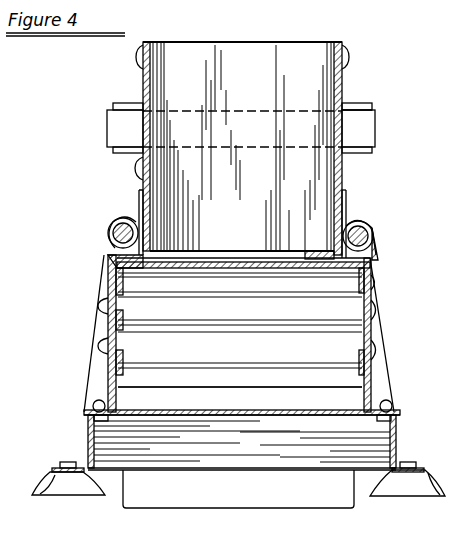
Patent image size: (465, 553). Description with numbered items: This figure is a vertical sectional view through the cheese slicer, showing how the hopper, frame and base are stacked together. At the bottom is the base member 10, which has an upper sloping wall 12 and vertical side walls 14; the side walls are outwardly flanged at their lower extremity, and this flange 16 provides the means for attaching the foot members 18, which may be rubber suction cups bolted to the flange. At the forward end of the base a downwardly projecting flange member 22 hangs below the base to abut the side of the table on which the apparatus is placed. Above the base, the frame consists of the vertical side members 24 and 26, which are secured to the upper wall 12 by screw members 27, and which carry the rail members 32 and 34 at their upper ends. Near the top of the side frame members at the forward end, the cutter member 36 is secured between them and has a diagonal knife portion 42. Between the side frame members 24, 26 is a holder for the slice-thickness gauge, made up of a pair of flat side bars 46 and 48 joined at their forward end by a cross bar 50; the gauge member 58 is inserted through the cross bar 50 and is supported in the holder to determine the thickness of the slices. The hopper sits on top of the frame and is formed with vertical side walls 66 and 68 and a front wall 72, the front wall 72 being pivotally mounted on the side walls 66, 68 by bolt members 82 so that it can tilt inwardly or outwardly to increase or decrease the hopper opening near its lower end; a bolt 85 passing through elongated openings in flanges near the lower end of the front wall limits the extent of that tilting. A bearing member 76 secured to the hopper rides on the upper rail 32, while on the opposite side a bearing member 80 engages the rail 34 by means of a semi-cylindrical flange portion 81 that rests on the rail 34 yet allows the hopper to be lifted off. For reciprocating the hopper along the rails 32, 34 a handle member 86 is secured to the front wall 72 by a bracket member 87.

The base member 10 is at (86, 435).
The upper sloping wall 12 is at (259, 412).
The vertical side walls 14 is at (90, 418).
The flange 16 is at (60, 467).
The foot members 18 is at (55, 480).
The downwardly projecting flange member 22 is at (165, 495).
The vertical side member 24 is at (108, 286).
The vertical side member 26 is at (380, 326).
The screw members 27 is at (93, 400).
The rail member 32 is at (108, 234).
The rail member 34 is at (380, 247).
The cutter member 36 is at (372, 271).
The diagonal knife portion 42 is at (312, 252).
The flat side bar 46 is at (108, 332).
The flat side bar 48 is at (362, 360).
The cross bar 50 is at (240, 330).
The gauge member 58 is at (140, 268).
The vertical side wall 66 is at (343, 133).
The vertical side wall 68 is at (143, 70).
The front wall 72 is at (264, 52).
The bearing member 76 is at (346, 216).
The bearing member 80 is at (118, 222).
The semi-cylindrical flange portion 81 is at (372, 226).
The bolt members 82 is at (347, 60).
The bolt 85 is at (136, 169).
The handle member 86 is at (345, 110).
The bracket member 87 is at (120, 123).